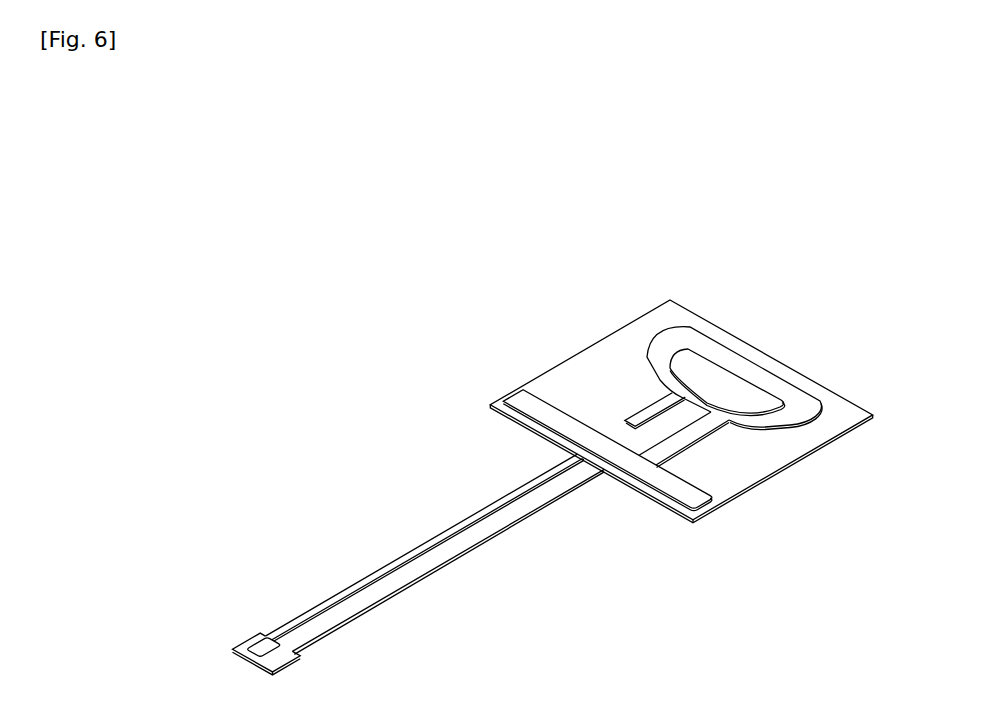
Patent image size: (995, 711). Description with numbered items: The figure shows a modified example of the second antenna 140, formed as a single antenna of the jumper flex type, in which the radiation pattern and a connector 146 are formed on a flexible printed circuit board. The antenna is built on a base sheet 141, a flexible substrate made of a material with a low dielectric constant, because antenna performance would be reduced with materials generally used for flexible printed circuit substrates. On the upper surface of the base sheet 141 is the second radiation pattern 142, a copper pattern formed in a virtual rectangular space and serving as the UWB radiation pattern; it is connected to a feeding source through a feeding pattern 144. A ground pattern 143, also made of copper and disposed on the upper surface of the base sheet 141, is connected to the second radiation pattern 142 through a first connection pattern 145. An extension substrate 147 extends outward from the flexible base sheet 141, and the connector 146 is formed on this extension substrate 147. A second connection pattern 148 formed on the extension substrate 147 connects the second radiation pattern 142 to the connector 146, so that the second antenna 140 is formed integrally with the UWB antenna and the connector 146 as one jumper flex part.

The second antenna 140 is at (359, 282).
The base sheet 141 is at (874, 415).
The second radiation pattern 142 is at (750, 358).
The ground pattern 143 is at (690, 512).
The feeding pattern 144 is at (645, 408).
The first connection pattern 145 is at (708, 433).
The connector 146 is at (265, 637).
The extension substrate 147 is at (449, 560).
The second connection pattern 148 is at (378, 579).